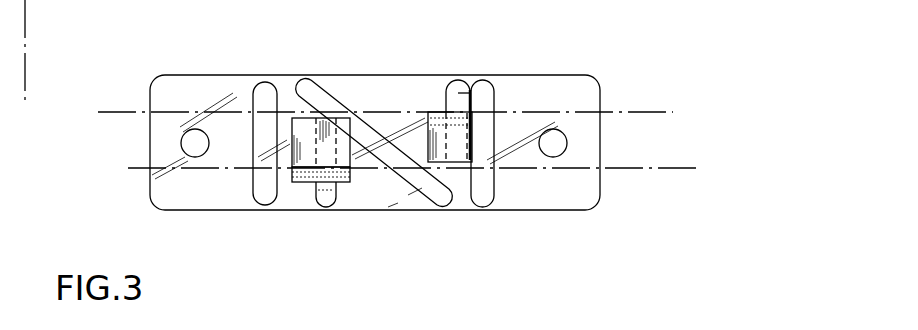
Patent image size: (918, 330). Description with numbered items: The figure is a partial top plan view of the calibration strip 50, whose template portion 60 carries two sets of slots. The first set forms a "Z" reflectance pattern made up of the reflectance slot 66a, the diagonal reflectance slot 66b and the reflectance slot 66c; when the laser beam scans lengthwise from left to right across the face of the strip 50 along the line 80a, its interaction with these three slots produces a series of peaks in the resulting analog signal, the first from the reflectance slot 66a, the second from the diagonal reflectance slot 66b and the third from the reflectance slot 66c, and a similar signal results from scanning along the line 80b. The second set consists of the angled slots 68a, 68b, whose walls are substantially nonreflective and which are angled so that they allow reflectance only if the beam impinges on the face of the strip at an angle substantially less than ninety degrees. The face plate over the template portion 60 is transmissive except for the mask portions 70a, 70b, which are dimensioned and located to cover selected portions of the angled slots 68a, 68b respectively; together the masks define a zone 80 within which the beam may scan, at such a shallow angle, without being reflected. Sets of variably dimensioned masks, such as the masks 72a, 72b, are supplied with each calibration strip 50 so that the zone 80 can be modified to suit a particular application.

The calibration strip 50 is at (623, 68).
The template portion 60 is at (193, 203).
The reflectance slot 66a is at (262, 102).
The diagonal reflectance slot 66b is at (428, 193).
The reflectance slot 66c is at (490, 180).
The angled slot 68a is at (462, 90).
The angled slot 68b is at (317, 190).
The mask portion 70a is at (437, 162).
The mask portion 70b is at (303, 122).
The variably dimensioned mask 72a is at (437, 113).
The variably dimensioned mask 72b is at (348, 178).
The zone 80 is at (112, 102).
The scan line 80a is at (658, 111).
The scan line 80b is at (670, 168).